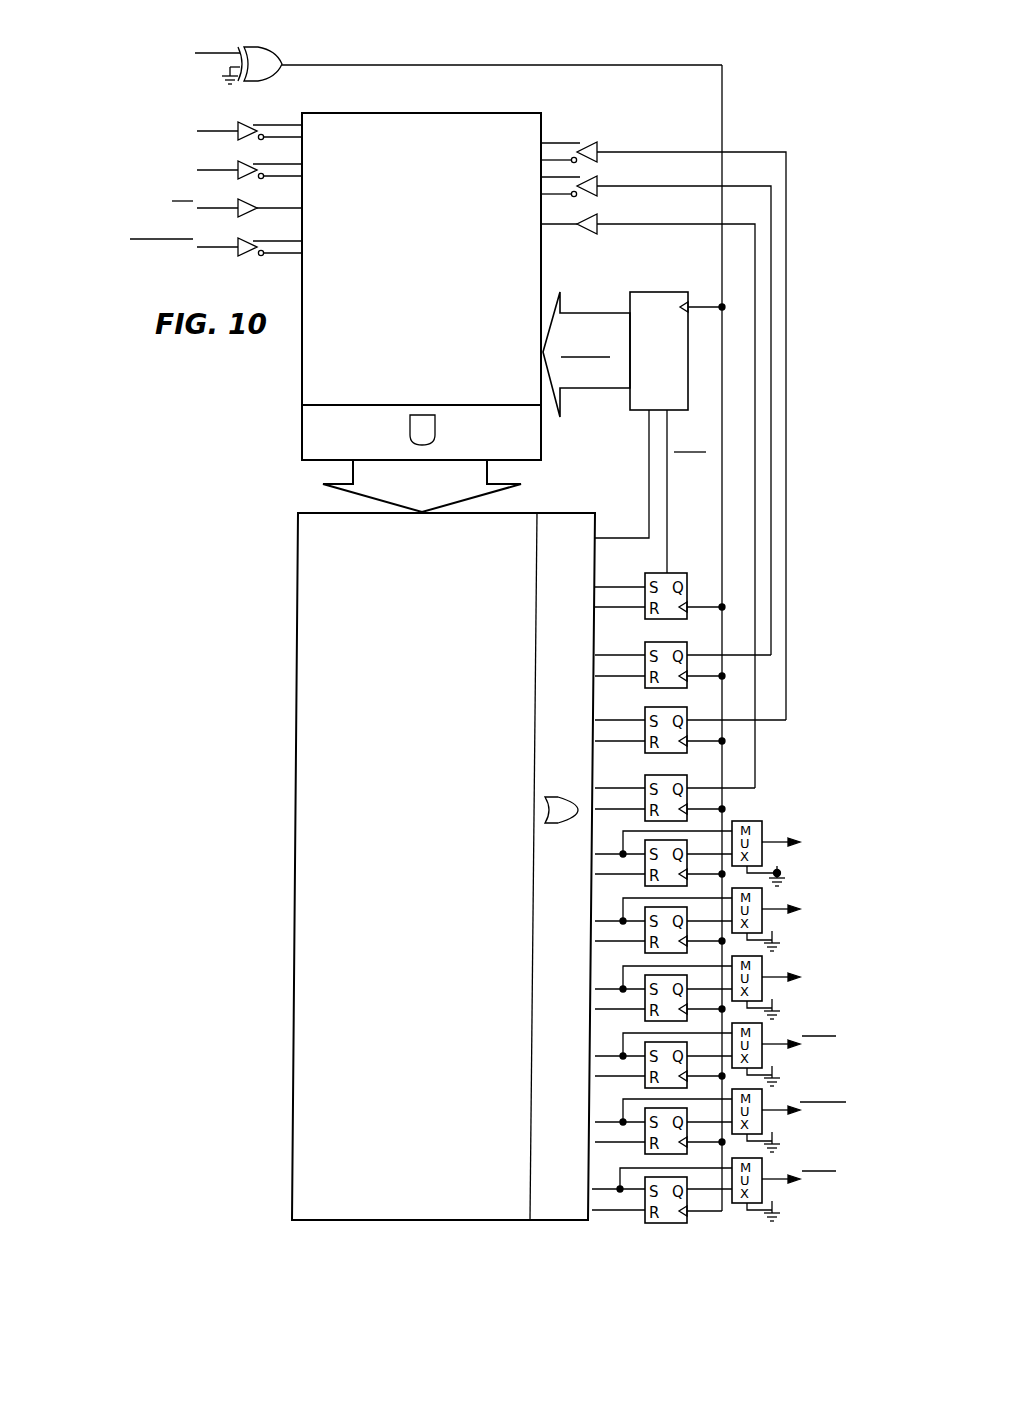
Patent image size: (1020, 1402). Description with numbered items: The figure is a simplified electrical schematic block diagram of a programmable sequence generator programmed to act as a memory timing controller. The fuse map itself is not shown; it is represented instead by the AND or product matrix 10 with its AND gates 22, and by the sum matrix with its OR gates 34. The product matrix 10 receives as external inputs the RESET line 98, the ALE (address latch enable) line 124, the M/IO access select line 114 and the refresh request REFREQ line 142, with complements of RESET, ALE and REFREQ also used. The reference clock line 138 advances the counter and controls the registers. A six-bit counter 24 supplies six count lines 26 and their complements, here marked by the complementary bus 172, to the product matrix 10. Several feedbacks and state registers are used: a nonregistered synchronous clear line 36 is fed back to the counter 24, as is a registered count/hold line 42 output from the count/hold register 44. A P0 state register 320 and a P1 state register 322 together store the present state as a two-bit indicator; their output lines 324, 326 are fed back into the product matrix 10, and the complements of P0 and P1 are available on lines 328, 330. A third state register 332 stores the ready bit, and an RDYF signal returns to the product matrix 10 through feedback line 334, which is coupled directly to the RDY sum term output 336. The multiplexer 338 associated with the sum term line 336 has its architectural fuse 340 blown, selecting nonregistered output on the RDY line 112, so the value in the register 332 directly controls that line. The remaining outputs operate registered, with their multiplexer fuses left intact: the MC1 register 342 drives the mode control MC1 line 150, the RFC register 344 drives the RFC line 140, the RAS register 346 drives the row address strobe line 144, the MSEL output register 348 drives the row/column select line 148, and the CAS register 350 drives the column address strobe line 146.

The reference clock line 138 is at (218, 53).
The RESET line 98 is at (233, 128).
The ALE line 124 is at (233, 168).
The M/IO line 114 is at (233, 206).
The REFREQ line 142 is at (233, 244).
The product matrix 10 is at (437, 334).
The AND gates 22 is at (370, 442).
The complement P1 line 330 is at (570, 143).
The complement P0 line 328 is at (562, 232).
The P1 output line 326 is at (640, 152).
The P0 output line 324 is at (655, 186).
The RDYF feedback line 334 is at (670, 226).
The count lines 26 is at (598, 313).
The complemented counter output bus 172 is at (594, 390).
The counter 24 is at (672, 359).
The synchronous clear line 36 is at (648, 473).
The count/hold line 42 is at (668, 481).
The OR gates 34 is at (576, 614).
The count/hold register 44 is at (646, 573).
The P0 state register 320 is at (645, 646).
The P1 state register 322 is at (645, 711).
The RDY state register 332 is at (645, 779).
The RDY sum term line 336 is at (643, 845).
The multiplexer 338 is at (752, 822).
The RDY line 112 is at (773, 842).
The architectural fuse 340 is at (790, 876).
The MC1 register 342 is at (645, 941).
The MC1 signal line 150 is at (792, 918).
The RFC register 344 is at (645, 980).
The RFC signal line 140 is at (792, 986).
The RAS register 346 is at (645, 1047).
The RAS line 144 is at (792, 1053).
The MSEL output register 348 is at (645, 1113).
The MSEL signal line 148 is at (792, 1120).
The CAS register 350 is at (640, 1222).
The CAS line 146 is at (792, 1189).